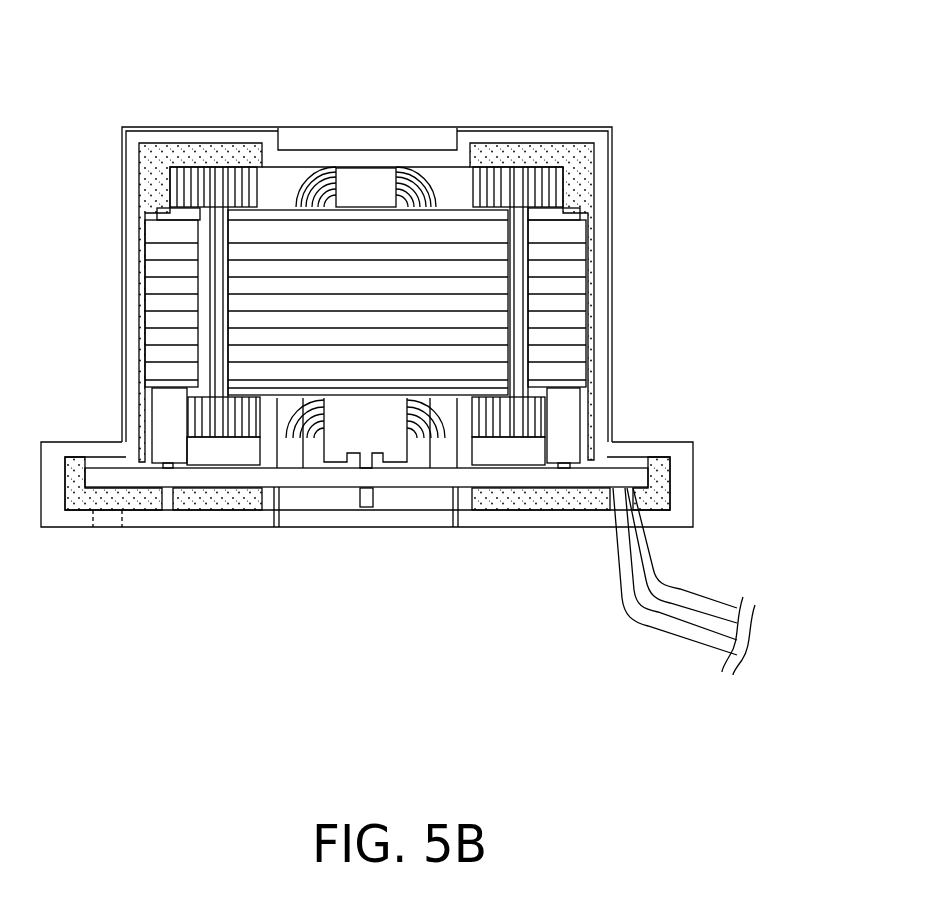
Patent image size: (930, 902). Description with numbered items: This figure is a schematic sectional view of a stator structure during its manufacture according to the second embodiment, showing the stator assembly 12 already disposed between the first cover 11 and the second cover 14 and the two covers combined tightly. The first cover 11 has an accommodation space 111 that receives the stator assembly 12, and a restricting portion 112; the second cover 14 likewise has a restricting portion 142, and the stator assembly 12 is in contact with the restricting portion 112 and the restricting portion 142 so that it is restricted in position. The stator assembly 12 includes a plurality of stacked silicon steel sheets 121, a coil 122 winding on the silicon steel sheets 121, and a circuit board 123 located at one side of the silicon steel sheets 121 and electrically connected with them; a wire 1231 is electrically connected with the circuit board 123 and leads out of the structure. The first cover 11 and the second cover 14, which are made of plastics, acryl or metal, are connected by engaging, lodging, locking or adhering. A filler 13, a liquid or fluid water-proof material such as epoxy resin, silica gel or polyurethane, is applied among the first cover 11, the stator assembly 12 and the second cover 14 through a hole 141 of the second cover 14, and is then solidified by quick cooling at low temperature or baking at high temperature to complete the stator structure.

The first cover 11 is at (583, 135).
The accommodation space 111 is at (153, 155).
The restricting portion 112 is at (277, 148).
The stator assembly 12 is at (466, 421).
The silicon steel sheets 121 is at (570, 287).
The coil 122 is at (557, 192).
The circuit board 123 is at (645, 481).
The wire 1231 is at (701, 579).
The filler 13 is at (518, 147).
The second cover 14 is at (523, 527).
The hole 141 is at (103, 528).
The restricting portion 142 is at (275, 495).